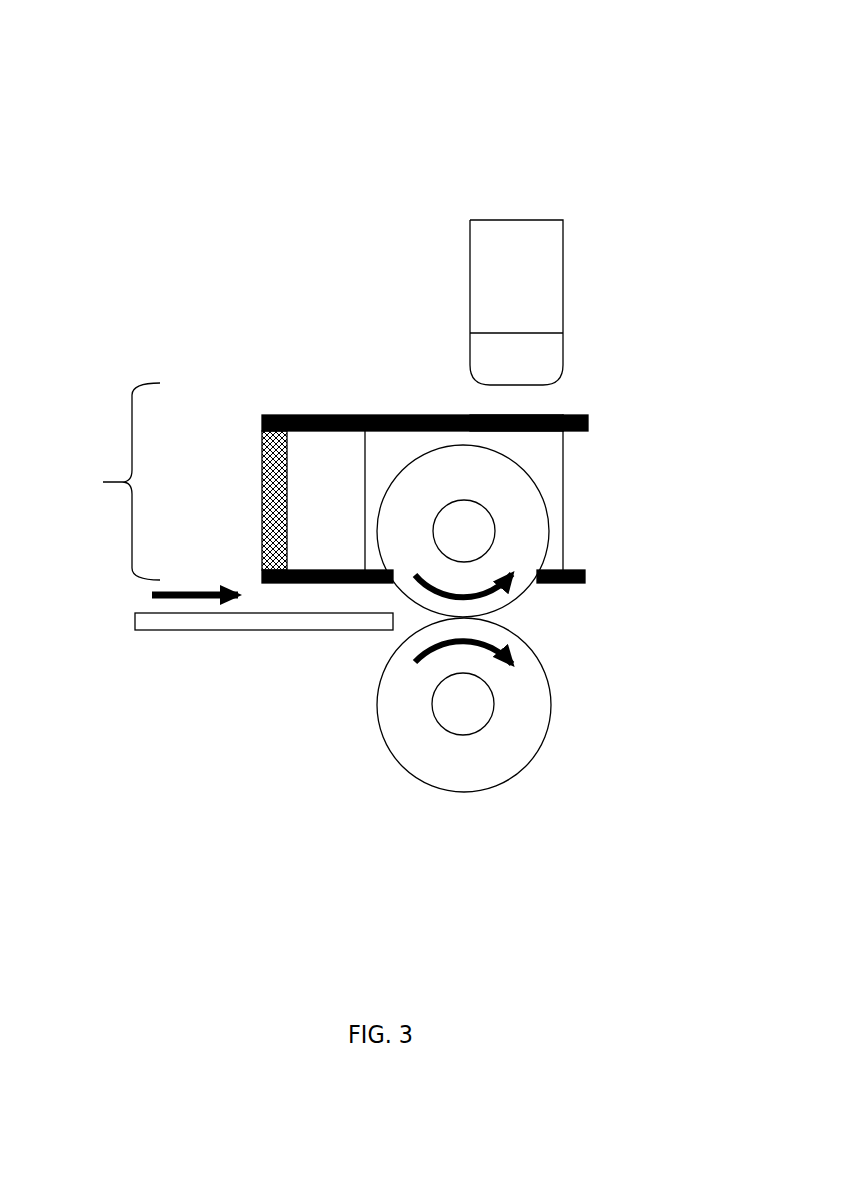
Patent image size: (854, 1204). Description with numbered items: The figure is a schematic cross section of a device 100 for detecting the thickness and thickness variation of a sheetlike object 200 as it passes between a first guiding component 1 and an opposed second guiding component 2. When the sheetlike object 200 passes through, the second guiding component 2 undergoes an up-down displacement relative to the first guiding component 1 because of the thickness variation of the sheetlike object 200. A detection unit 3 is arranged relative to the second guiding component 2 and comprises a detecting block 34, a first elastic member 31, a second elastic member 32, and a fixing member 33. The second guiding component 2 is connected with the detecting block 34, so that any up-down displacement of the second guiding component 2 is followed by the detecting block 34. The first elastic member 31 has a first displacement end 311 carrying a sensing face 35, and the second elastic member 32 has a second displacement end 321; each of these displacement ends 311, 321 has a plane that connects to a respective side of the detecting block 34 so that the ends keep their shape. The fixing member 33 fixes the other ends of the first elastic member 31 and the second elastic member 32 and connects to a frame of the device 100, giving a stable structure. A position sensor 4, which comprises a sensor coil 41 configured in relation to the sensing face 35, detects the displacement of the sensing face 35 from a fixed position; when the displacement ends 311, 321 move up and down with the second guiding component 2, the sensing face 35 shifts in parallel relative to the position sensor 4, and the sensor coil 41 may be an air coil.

The device 100 is at (243, 167).
The sheetlike object 200 is at (157, 632).
The first guiding component 1 is at (523, 700).
The second guiding component 2 is at (520, 565).
The detection unit 3 is at (387, 473).
The first elastic member 31 is at (322, 417).
The first displacement end 311 is at (578, 415).
The second elastic member 32 is at (323, 572).
The second displacement end 321 is at (587, 578).
The fixing member 33 is at (263, 452).
The detecting block 34 is at (541, 480).
The sensing face 35 is at (528, 417).
The position sensor 4 is at (553, 302).
The sensor coil 41 is at (540, 383).